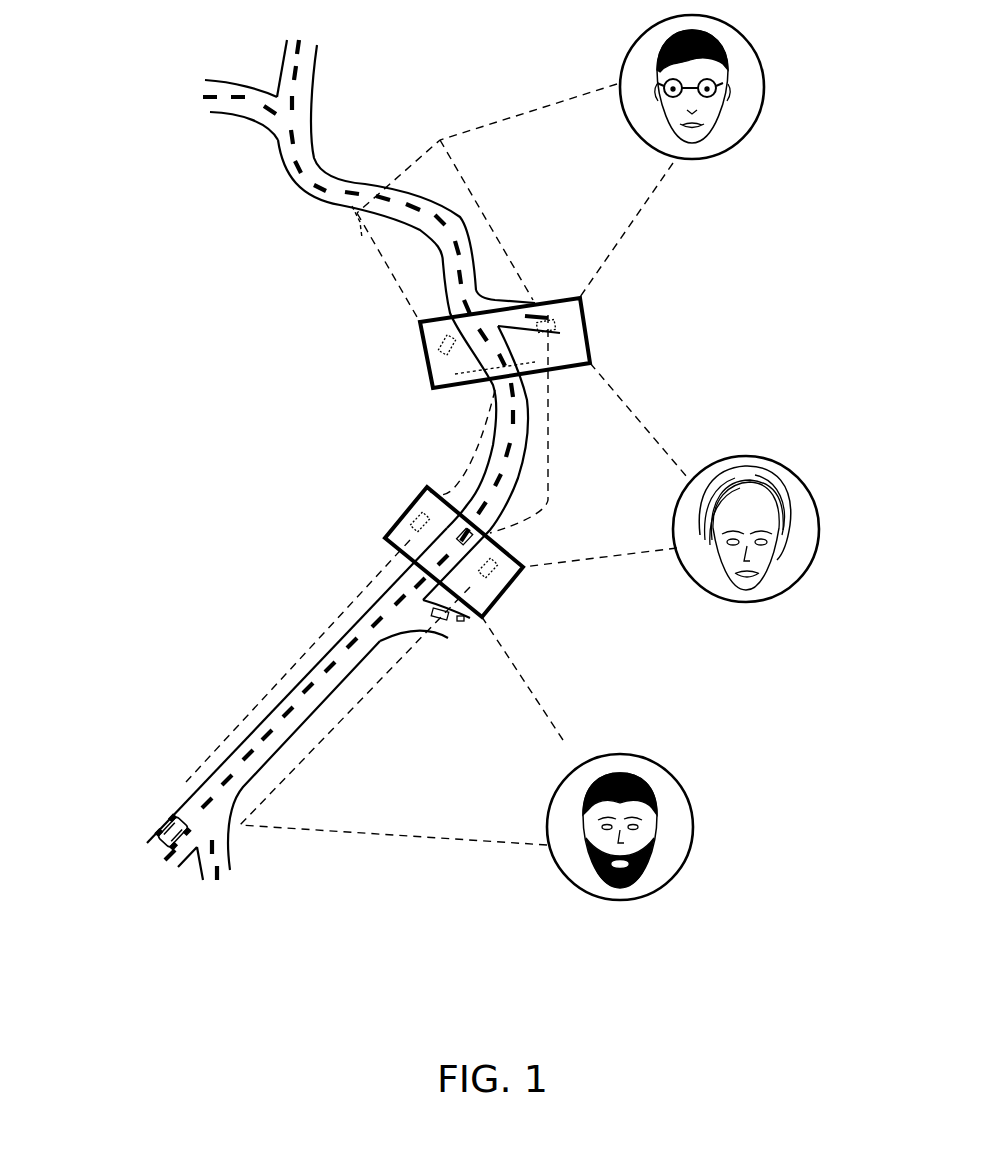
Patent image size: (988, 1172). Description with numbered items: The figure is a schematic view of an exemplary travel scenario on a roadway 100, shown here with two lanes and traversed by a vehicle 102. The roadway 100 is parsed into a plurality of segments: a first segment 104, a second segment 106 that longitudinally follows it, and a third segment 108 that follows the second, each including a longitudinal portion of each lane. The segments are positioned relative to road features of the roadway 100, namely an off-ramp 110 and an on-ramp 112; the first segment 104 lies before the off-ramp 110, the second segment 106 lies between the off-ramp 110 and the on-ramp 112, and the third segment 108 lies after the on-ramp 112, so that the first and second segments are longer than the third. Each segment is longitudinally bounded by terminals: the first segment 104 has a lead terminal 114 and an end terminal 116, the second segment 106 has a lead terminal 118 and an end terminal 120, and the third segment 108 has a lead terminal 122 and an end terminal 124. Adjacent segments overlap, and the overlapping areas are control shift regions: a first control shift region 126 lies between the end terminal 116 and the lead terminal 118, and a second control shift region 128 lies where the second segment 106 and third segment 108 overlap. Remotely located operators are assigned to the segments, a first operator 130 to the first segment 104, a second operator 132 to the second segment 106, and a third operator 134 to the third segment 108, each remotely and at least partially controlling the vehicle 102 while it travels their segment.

The roadway 100 is at (150, 60).
The vehicle 102 is at (160, 835).
The first segment 104 is at (320, 615).
The second segment 106 is at (467, 460).
The third segment 108 is at (381, 265).
The off-ramp 110 is at (437, 625).
The on-ramp 112 is at (490, 292).
The lead terminal 114 is at (200, 773).
The end terminal 116 is at (545, 520).
The lead terminal 118 is at (400, 511).
The end terminal 120 is at (432, 314).
The lead terminal 122 is at (470, 390).
The end terminal 124 is at (357, 216).
The first control shift region 126 is at (513, 594).
The second control shift region 128 is at (590, 337).
The first operator 130 is at (693, 830).
The second operator 132 is at (820, 530).
The third operator 134 is at (767, 87).